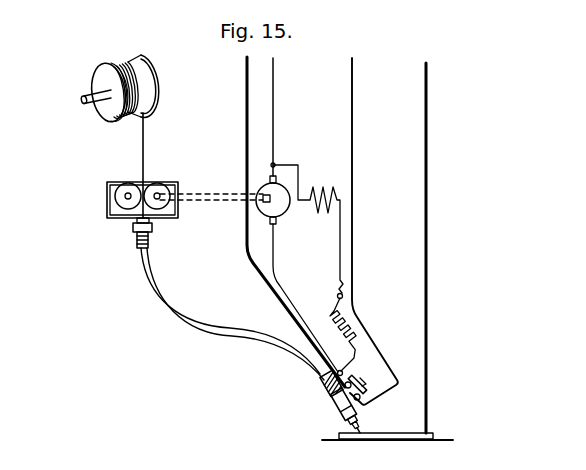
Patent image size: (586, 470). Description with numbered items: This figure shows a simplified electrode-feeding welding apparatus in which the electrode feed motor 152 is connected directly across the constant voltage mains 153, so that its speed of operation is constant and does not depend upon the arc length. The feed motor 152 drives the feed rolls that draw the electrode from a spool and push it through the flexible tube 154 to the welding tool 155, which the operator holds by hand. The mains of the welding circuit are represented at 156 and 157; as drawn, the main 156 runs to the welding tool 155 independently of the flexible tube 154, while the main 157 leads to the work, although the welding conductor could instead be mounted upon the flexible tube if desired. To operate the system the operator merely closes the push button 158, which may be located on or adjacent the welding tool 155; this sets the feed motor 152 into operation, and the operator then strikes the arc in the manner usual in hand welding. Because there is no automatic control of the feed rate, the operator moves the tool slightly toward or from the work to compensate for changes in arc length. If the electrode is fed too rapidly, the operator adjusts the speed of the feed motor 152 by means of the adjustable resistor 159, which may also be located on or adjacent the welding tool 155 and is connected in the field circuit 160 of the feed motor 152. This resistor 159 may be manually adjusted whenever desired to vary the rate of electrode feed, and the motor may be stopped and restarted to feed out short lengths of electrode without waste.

The electrode feed motor 152 is at (283, 210).
The constant voltage mains 153 is at (353, 100).
The flexible tube 154 is at (137, 241).
The welding tool 155 is at (330, 401).
The main of the welding circuit 156 is at (247, 106).
The main of the welding circuit 157 is at (428, 108).
The push button 158 is at (367, 395).
The adjustable resistor 159 is at (363, 331).
The field circuit 160 is at (303, 190).